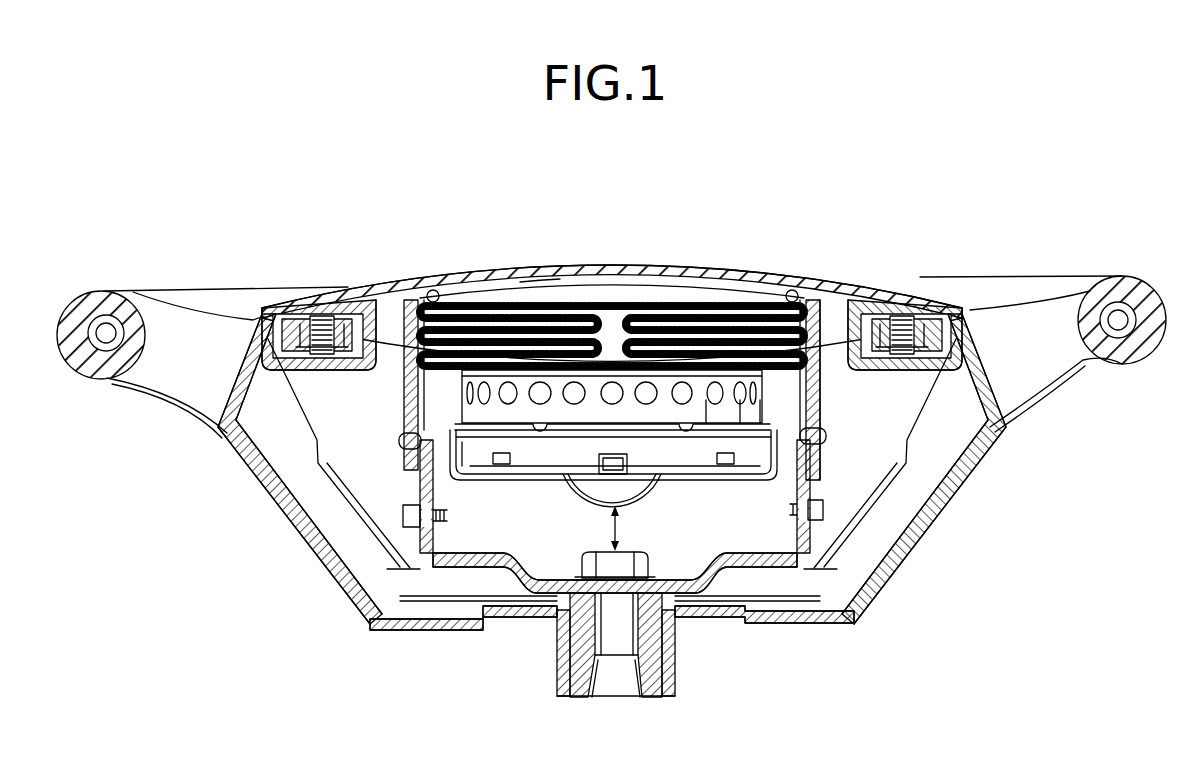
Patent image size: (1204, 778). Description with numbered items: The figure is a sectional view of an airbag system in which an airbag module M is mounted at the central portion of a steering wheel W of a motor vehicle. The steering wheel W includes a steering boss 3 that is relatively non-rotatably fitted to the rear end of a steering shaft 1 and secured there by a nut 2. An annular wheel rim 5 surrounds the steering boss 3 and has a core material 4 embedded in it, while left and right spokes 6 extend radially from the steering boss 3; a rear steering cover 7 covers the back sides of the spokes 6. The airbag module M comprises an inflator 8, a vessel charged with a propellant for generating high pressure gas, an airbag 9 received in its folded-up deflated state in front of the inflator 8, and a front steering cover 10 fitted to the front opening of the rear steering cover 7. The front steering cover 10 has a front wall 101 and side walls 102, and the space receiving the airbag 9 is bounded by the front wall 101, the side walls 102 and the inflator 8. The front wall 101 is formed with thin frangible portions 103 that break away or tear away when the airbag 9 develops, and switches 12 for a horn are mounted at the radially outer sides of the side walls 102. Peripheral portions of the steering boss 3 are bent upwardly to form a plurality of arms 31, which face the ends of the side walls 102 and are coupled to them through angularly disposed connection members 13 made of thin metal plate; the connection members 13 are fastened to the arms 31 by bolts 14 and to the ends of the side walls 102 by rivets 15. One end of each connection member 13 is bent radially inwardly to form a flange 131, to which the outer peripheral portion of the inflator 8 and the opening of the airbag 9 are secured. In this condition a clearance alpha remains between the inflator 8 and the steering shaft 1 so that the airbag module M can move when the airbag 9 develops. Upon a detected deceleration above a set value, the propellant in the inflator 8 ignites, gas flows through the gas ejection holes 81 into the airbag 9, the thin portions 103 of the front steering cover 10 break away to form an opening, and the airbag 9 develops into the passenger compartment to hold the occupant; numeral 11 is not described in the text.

The steering shaft 1 is at (620, 688).
The nut 2 is at (628, 566).
The steering boss 3 is at (748, 543).
The arms 31 is at (434, 489).
The core material 4 is at (102, 378).
The wheel rim 5 is at (87, 296).
The spokes 6 is at (330, 491).
The rear steering cover 7 is at (887, 581).
The inflator 8 is at (542, 484).
The gas ejection holes 81 is at (645, 401).
The airbag 9 is at (751, 302).
The front steering cover 10 is at (588, 262).
The front wall 101 is at (542, 277).
The side walls 102 is at (822, 358).
The thin frangible portions 103 is at (437, 290).
The inner liner 11 is at (651, 292).
The switches 12 is at (333, 296).
The connection members 13 is at (826, 468).
The flange 131 is at (483, 450).
The bolts 14 is at (402, 516).
The rivets 15 is at (398, 443).
The airbag module M is at (612, 333).
The steering wheel W is at (611, 311).
The clearance alpha is at (612, 540).